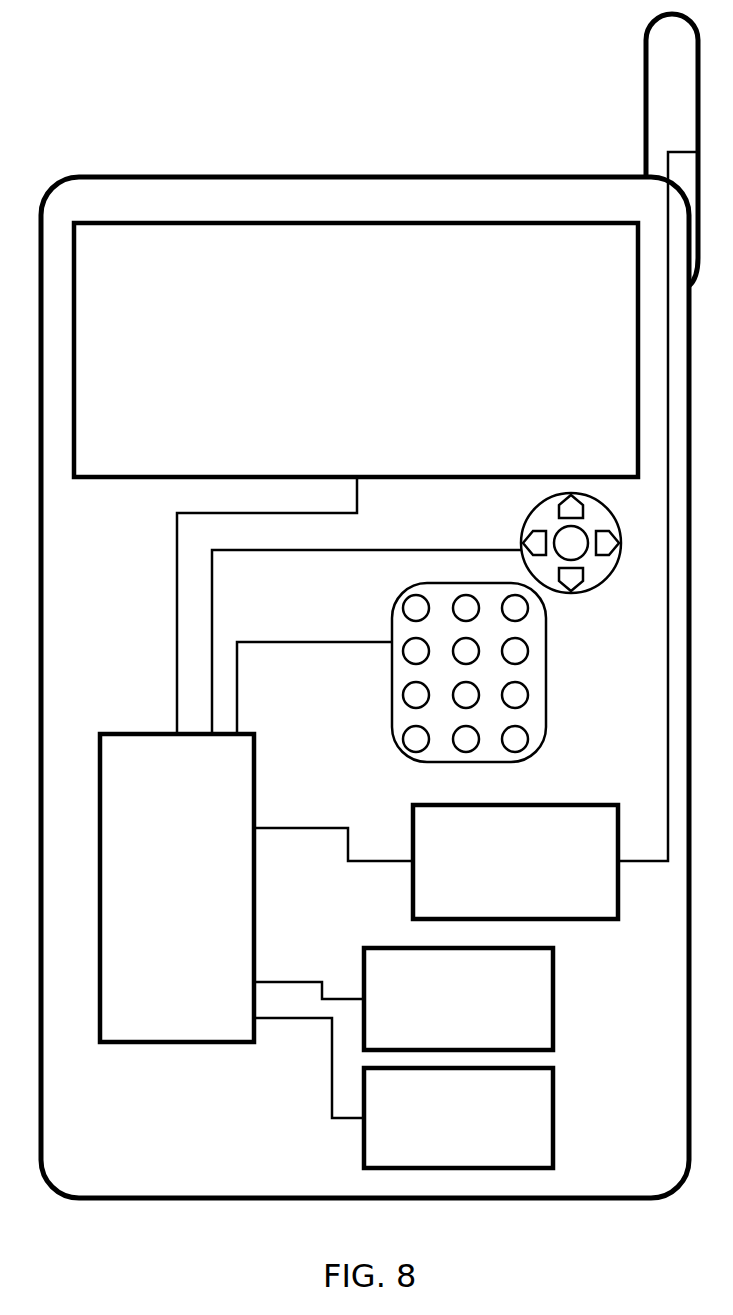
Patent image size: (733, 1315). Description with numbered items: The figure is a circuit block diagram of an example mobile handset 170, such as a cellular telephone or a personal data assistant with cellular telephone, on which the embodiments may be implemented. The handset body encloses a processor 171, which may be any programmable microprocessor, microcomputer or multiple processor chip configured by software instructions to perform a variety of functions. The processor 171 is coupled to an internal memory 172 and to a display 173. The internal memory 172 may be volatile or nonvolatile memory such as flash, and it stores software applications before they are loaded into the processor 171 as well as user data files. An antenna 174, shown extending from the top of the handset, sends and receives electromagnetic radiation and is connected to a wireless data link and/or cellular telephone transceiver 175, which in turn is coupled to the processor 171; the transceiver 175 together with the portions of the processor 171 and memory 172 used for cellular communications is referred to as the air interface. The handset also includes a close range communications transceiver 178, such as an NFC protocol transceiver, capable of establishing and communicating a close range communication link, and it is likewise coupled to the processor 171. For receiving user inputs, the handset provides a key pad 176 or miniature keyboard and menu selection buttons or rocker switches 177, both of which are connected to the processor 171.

The mobile handset 170 is at (312, 177).
The processor 171 is at (196, 899).
The internal memory 172 is at (478, 1009).
The display 173 is at (358, 352).
The antenna 174 is at (645, 48).
The cellular telephone transceiver 175 is at (535, 872).
The key pad 176 is at (546, 717).
The rocker switches 177 is at (572, 593).
The close range communications transceiver 178 is at (478, 1129).